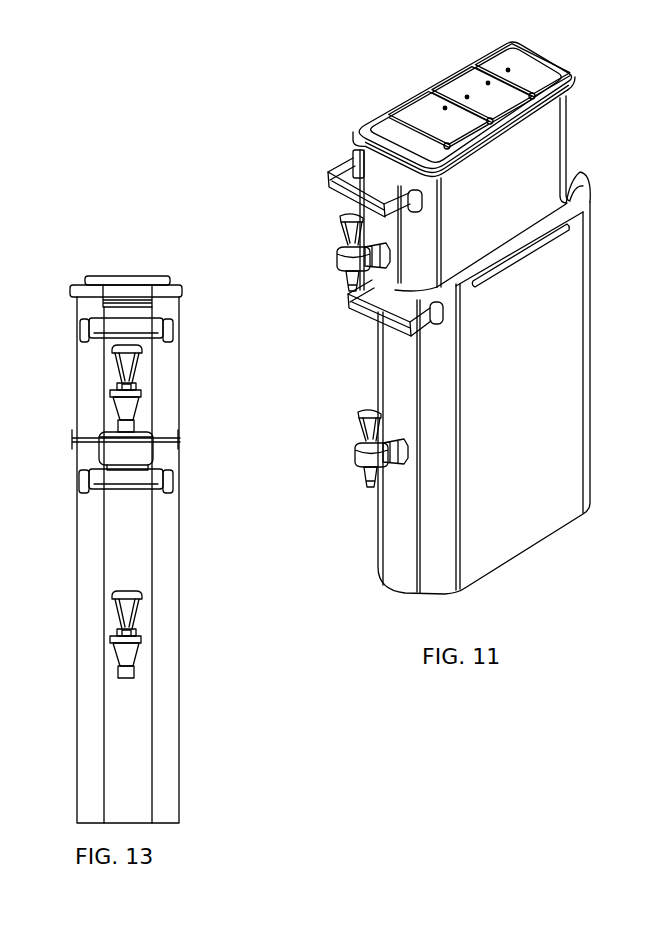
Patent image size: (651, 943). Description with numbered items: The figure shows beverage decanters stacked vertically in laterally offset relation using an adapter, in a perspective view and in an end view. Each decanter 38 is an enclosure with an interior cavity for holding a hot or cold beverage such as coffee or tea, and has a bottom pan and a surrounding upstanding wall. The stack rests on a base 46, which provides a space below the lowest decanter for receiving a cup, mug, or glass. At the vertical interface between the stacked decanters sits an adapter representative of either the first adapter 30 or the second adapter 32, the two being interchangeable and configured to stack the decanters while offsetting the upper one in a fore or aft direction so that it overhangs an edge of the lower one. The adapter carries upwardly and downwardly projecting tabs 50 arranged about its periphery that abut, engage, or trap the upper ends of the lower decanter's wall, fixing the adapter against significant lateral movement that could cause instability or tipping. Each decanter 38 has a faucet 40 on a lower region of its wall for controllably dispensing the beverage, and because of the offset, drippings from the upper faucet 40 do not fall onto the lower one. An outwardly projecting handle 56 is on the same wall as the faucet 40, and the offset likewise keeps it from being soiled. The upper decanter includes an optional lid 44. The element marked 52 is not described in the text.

In FIG. 11, the first adapter 30 is at (585, 171).
In FIG. 13, the first adapter 30 is at (185, 440).
In FIG. 11, the second adapter 32 is at (495, 193).
In FIG. 13, the second adapter 32 is at (163, 416).
In FIG. 11, the decanter 38 is at (572, 113).
In FIG. 13, the decanter 38 is at (181, 357).
In FIG. 11, the faucet 40 is at (336, 268).
In FIG. 13, the faucet 40 is at (112, 407).
In FIG. 11, the lid 44 is at (455, 80).
In FIG. 13, the lid 44 is at (158, 277).
In FIG. 11, the base 46 is at (594, 181).
In FIG. 11, the tabs 50 is at (466, 264).
In FIG. 13, the tabs 50 is at (150, 455).
In FIG. 11, the joint 52 is at (390, 273).
In FIG. 13, the joint 52 is at (182, 440).
In FIG. 11, the handle 56 is at (362, 327).
In FIG. 13, the handle 56 is at (100, 488).